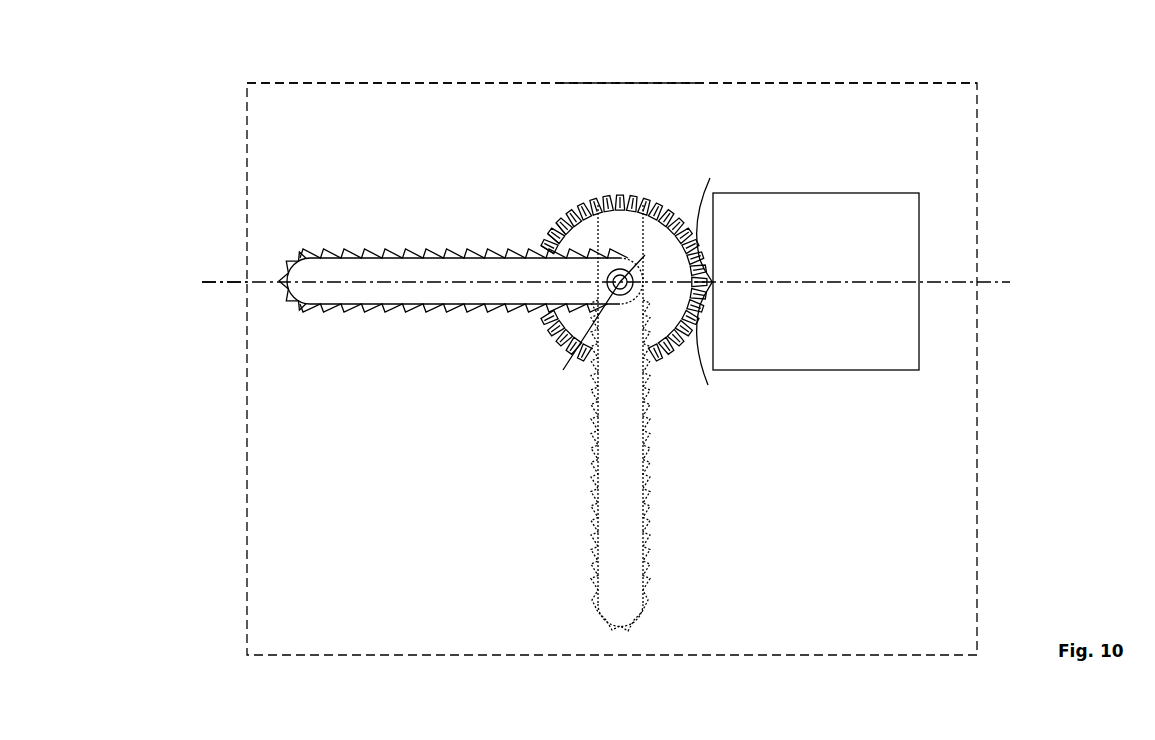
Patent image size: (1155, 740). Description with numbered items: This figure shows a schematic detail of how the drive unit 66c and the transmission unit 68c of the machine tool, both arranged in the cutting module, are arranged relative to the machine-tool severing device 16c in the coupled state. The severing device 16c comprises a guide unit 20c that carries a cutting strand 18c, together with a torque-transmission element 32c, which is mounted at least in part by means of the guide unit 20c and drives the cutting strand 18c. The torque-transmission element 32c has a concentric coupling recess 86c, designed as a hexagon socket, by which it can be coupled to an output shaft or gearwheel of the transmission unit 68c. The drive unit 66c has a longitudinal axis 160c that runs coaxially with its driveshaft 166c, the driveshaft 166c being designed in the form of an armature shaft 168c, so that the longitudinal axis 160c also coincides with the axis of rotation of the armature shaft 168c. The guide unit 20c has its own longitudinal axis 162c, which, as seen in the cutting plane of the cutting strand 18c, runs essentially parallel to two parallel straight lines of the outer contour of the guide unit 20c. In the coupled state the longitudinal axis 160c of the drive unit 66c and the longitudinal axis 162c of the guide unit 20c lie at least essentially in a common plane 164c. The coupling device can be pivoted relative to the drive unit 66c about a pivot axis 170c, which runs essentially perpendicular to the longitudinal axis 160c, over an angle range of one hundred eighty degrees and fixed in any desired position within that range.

The machine-tool severing device 16c is at (280, 219).
The cutting strand 18c is at (325, 252).
The guide unit 20c is at (328, 304).
The torque-transmission element 32c is at (651, 196).
The drive unit 66c is at (953, 158).
The transmission unit 68c is at (620, 102).
The coupling recess 86c is at (563, 370).
The longitudinal axis of the drive unit 160c is at (1002, 282).
The longitudinal axis of the guide unit 162c is at (208, 284).
The common plane 164c is at (903, 82).
The driveshaft 166c is at (708, 193).
The armature shaft 168c is at (708, 385).
The pivot axis 170c is at (549, 240).